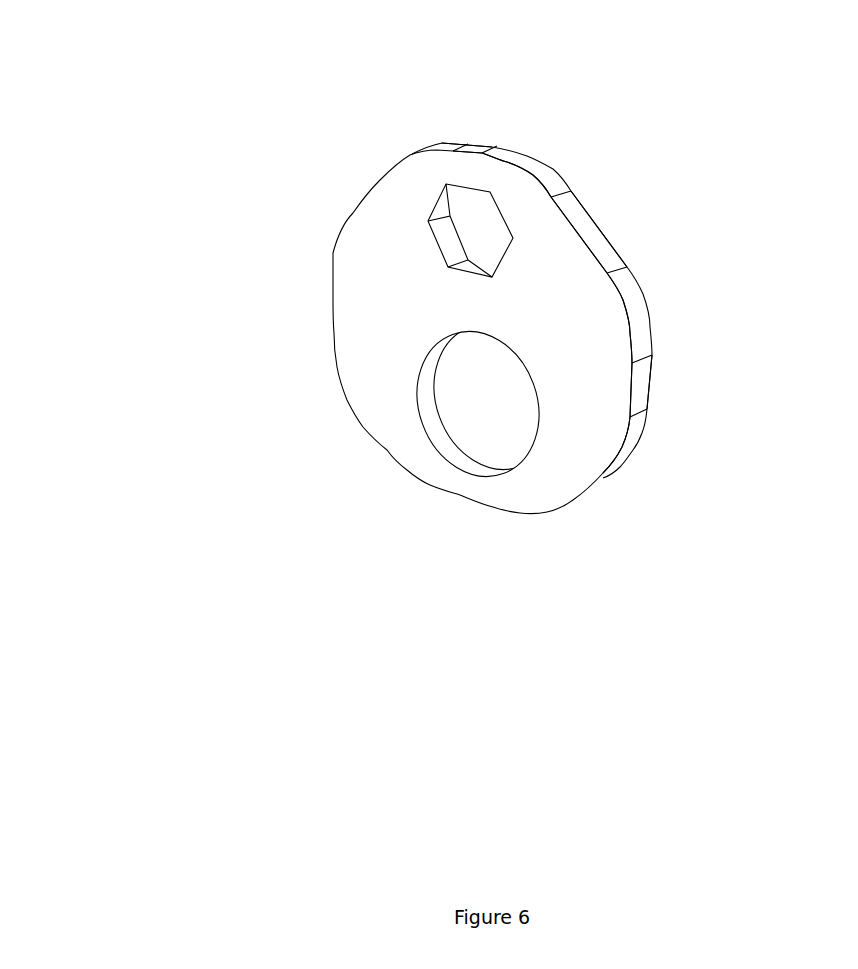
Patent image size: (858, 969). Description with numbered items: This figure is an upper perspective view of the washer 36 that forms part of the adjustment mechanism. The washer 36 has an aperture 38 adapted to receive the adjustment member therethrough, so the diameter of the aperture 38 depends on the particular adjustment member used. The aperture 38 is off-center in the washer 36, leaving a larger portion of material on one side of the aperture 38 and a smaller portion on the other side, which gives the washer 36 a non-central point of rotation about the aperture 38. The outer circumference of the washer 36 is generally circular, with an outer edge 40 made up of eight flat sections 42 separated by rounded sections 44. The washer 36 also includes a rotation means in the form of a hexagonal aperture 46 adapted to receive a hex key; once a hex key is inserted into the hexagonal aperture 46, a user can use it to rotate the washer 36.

The washer 36 is at (423, 316).
The aperture 38 is at (418, 453).
The outer edge 40 is at (414, 328).
The flat sections 42 is at (601, 247).
The rounded sections 44 is at (612, 333).
The hexagonal aperture 46 is at (403, 164).